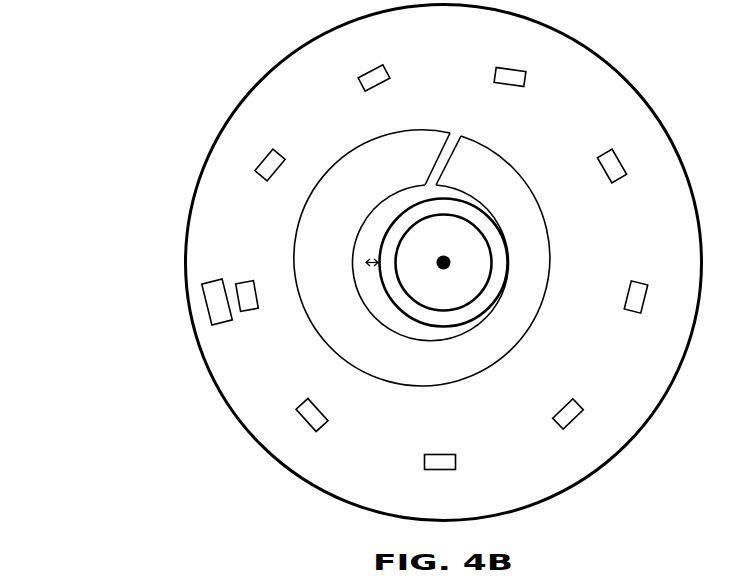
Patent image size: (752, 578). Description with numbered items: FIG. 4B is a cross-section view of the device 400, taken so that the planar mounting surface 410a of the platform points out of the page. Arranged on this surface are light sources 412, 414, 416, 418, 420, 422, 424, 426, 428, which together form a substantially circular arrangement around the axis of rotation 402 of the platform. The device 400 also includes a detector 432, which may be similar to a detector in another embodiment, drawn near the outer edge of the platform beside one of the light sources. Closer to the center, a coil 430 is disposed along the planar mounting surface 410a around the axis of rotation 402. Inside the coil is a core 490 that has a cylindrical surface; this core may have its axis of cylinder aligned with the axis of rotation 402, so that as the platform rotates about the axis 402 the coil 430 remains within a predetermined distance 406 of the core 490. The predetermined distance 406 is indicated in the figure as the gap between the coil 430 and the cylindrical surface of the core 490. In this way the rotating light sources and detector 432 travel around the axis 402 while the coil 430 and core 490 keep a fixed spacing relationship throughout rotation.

The device 400 is at (76, 76).
The axis of rotation 402 is at (442, 258).
The predetermined distance 406 is at (372, 268).
The side of platform 410a is at (467, 505).
The light source 412 is at (272, 153).
The light source 414 is at (244, 283).
The light source 416 is at (298, 409).
The light source 418 is at (426, 466).
The light source 420 is at (556, 416).
The light source 422 is at (641, 284).
The light source 424 is at (606, 151).
The light source 426 is at (498, 70).
The light source 428 is at (360, 76).
The coil 430 is at (462, 375).
The detector 432 is at (202, 300).
The core 490 is at (461, 300).